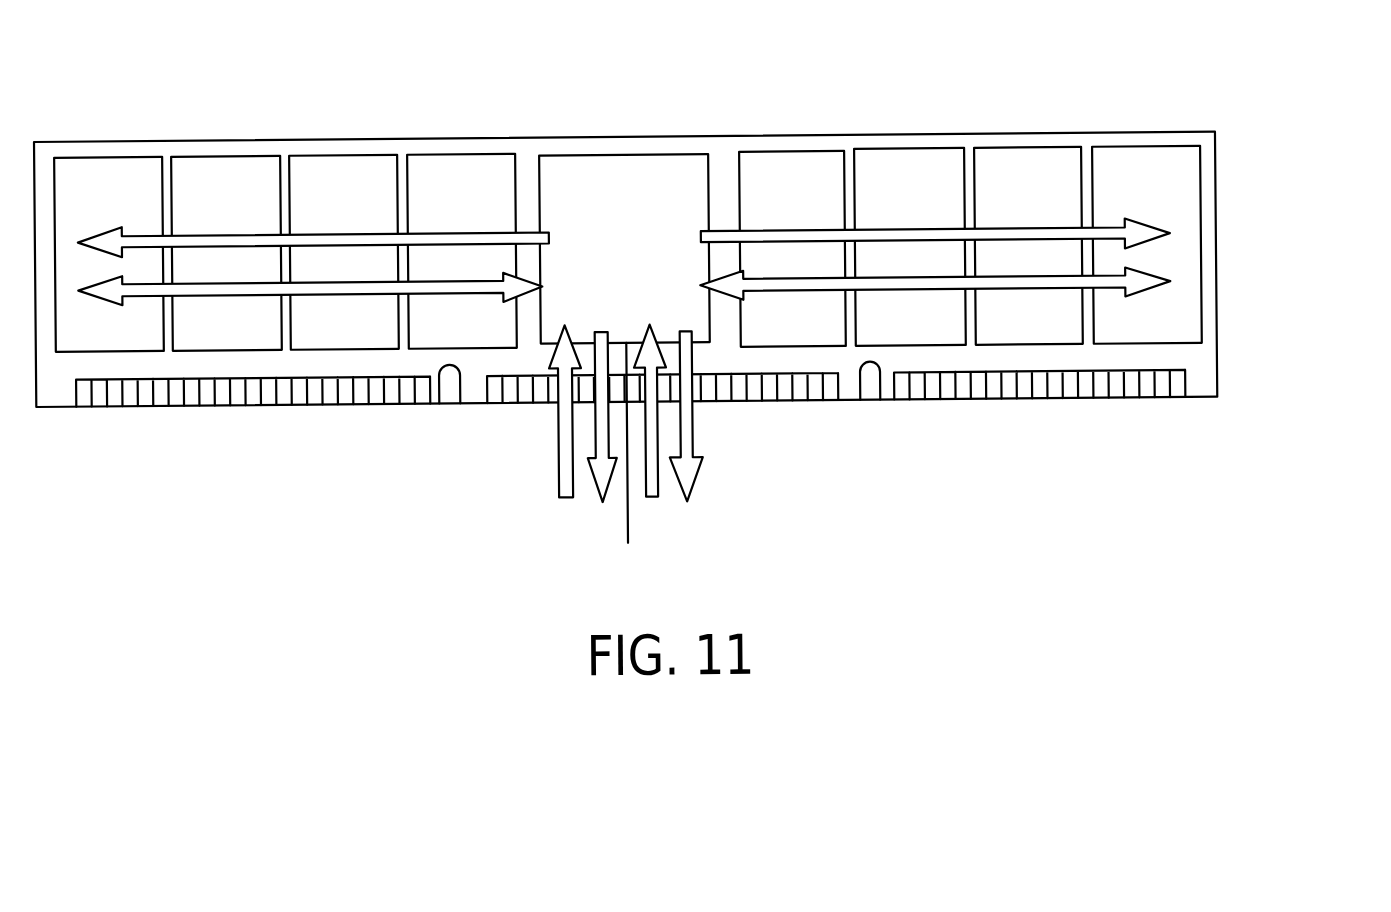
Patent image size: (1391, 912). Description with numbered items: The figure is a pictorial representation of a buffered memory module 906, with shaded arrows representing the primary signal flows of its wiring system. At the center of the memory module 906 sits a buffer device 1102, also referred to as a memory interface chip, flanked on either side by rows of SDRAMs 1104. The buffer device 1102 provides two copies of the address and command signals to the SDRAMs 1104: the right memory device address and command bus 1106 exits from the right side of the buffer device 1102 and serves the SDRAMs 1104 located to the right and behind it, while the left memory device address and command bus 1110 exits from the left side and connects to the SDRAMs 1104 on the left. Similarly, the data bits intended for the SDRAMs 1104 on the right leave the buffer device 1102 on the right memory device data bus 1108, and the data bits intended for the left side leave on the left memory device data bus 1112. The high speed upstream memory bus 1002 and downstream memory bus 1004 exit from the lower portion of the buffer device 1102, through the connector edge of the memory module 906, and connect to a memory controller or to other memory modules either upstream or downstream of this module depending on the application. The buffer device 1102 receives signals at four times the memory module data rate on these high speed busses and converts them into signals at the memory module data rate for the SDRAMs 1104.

The memory module 906 is at (1216, 310).
The SDRAMs 1104 is at (628, 249).
The buffer device 1102 is at (562, 182).
The left memory device address and command bus 1110 is at (501, 231).
The right memory device address and command bus 1106 is at (717, 234).
The left memory device data bus 1112 is at (299, 299).
The right memory device data bus 1108 is at (987, 298).
The downstream memory bus 1004 is at (555, 505).
The upstream memory bus 1002 is at (599, 508).